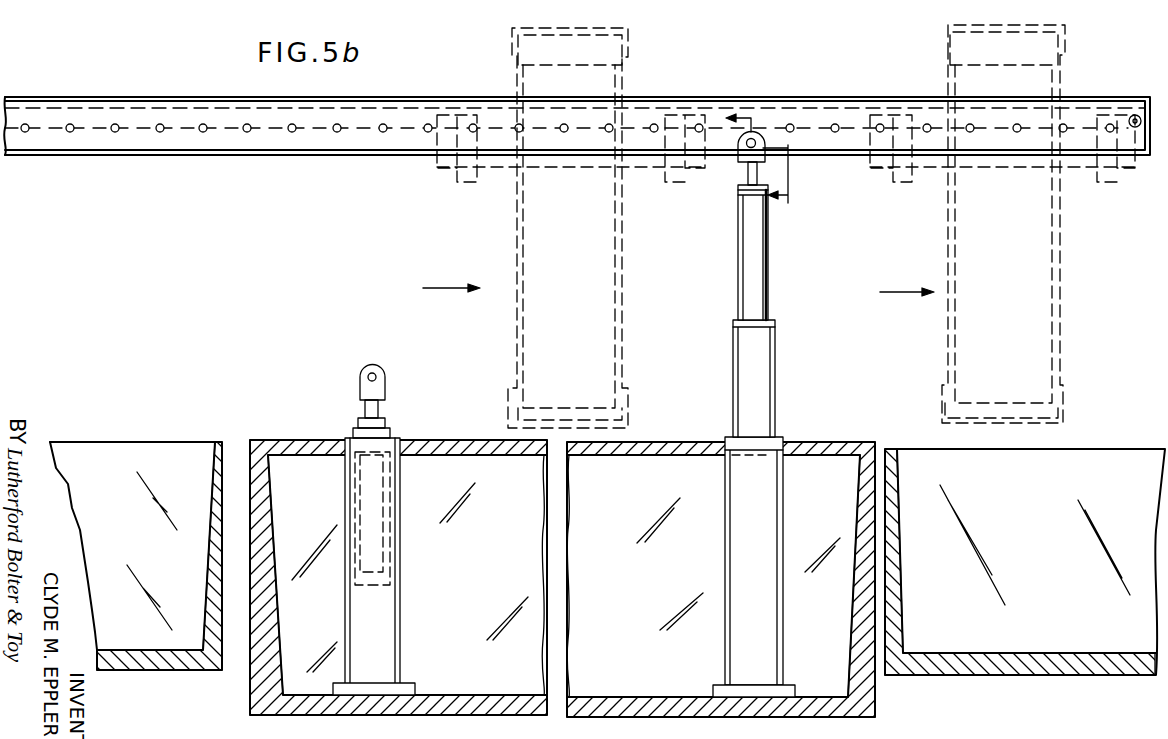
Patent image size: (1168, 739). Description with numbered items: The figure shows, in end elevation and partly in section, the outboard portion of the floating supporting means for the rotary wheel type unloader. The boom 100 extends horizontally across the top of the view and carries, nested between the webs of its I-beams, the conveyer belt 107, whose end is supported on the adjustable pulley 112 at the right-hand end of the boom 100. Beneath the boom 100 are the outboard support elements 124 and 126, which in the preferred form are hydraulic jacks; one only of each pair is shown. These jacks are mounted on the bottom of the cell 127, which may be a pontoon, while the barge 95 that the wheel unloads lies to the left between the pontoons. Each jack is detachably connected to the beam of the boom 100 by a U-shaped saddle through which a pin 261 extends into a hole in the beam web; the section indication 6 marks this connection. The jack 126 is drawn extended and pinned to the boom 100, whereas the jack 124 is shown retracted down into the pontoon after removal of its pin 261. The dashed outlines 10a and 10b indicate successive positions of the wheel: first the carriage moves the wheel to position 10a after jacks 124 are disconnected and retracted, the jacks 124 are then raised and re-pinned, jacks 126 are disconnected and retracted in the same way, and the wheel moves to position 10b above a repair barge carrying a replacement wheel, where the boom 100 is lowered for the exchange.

The boom 100 is at (410, 97).
The conveyer belt 107 is at (136, 130).
The adjustable pulley 112 is at (1146, 105).
The wheel position 10a is at (634, 278).
The wheel position 10b is at (1072, 302).
The barge 95 is at (172, 568).
The support element (hydraulic jack) 124 is at (400, 522).
The support element (hydraulic jack) 126 is at (738, 382).
The cell (pontoon) 127 is at (606, 632).
The pin 261 is at (742, 157).
The section line 6- 6 is at (748, 164).